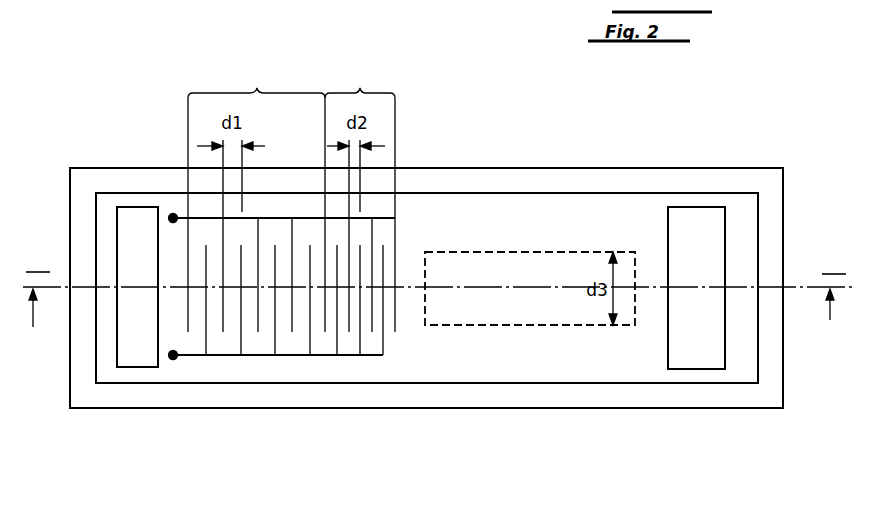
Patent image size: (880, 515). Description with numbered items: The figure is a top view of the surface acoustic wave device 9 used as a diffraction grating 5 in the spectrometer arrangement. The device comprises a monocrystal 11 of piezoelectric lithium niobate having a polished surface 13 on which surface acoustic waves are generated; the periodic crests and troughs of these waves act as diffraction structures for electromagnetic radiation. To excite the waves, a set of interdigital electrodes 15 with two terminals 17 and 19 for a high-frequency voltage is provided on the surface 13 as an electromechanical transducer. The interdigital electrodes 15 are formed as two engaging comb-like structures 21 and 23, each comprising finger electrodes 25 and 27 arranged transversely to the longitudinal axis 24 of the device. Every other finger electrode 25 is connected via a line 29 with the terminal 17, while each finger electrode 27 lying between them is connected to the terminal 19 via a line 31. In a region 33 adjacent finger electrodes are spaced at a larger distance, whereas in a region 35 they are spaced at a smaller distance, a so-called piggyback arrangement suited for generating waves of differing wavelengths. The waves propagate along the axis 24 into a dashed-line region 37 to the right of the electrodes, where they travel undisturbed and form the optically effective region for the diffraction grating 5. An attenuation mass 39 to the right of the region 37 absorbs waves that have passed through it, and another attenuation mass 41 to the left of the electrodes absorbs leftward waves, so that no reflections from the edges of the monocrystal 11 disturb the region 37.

The diffraction grating 5 is at (545, 243).
The surface acoustic wave device 9 is at (713, 167).
The monocrystal 11 is at (595, 210).
The polished surface 13 is at (644, 204).
The interdigital electrodes 15 is at (401, 361).
The terminal 17 is at (171, 360).
The terminal 19 is at (170, 214).
The comb-like structure 21 is at (222, 364).
The comb-like structure 23 is at (401, 231).
The longitudinal axis 24 is at (790, 293).
The finger electrodes 25 is at (310, 342).
The finger electrodes 27 is at (325, 235).
The line 29 is at (200, 357).
The line 31 is at (175, 213).
The region 33 is at (256, 140).
The region 35 is at (360, 140).
The region 37 is at (510, 300).
The attenuation mass 39 is at (693, 372).
The attenuation mass 41 is at (128, 368).